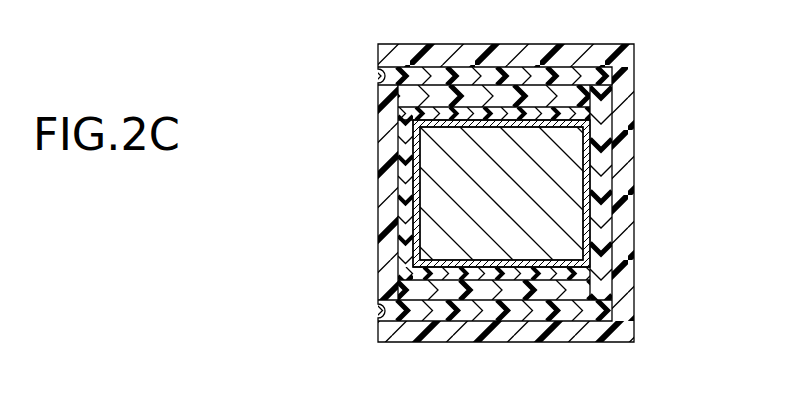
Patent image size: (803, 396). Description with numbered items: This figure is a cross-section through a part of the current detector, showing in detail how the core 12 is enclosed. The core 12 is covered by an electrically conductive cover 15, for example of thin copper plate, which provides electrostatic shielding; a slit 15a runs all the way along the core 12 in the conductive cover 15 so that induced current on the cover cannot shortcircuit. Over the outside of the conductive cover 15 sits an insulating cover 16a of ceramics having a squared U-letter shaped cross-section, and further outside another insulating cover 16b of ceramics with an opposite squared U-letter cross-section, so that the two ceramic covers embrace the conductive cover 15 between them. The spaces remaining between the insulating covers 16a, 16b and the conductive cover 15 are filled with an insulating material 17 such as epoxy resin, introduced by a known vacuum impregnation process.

The core 12 is at (447, 220).
The conductive cover 15 is at (600, 217).
The slit 15a is at (502, 118).
The insulating cover 16a is at (390, 115).
The insulating cover 16b is at (623, 115).
The insulating material 17 is at (603, 162).